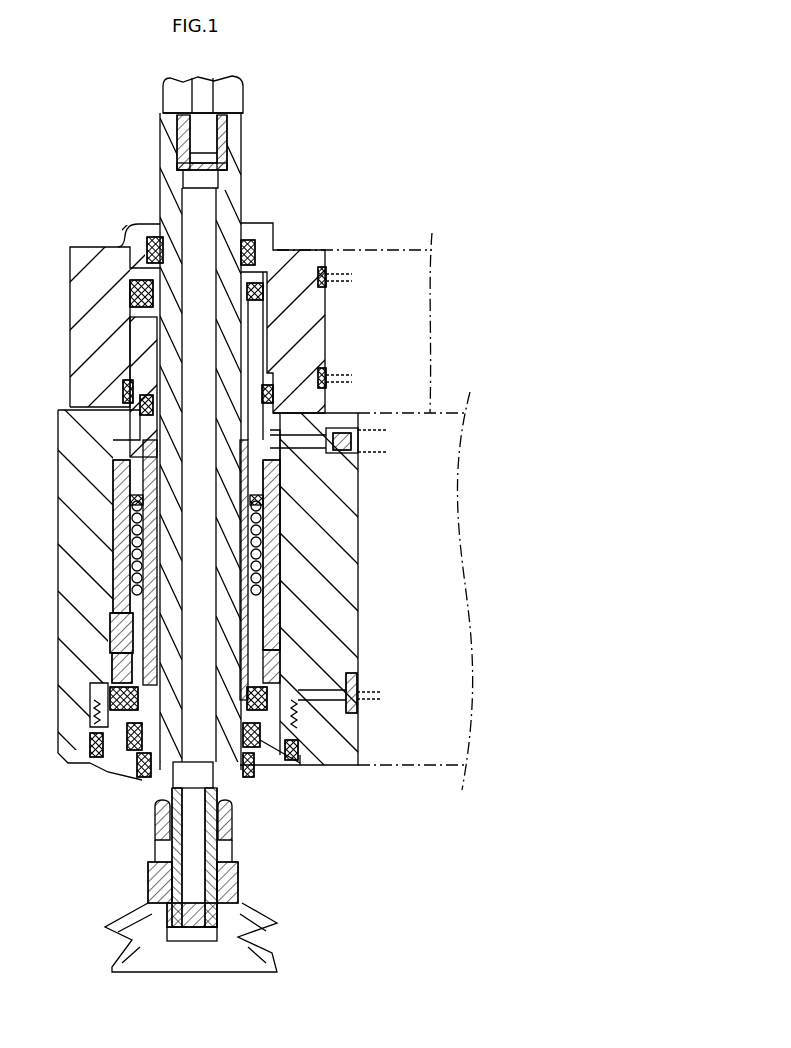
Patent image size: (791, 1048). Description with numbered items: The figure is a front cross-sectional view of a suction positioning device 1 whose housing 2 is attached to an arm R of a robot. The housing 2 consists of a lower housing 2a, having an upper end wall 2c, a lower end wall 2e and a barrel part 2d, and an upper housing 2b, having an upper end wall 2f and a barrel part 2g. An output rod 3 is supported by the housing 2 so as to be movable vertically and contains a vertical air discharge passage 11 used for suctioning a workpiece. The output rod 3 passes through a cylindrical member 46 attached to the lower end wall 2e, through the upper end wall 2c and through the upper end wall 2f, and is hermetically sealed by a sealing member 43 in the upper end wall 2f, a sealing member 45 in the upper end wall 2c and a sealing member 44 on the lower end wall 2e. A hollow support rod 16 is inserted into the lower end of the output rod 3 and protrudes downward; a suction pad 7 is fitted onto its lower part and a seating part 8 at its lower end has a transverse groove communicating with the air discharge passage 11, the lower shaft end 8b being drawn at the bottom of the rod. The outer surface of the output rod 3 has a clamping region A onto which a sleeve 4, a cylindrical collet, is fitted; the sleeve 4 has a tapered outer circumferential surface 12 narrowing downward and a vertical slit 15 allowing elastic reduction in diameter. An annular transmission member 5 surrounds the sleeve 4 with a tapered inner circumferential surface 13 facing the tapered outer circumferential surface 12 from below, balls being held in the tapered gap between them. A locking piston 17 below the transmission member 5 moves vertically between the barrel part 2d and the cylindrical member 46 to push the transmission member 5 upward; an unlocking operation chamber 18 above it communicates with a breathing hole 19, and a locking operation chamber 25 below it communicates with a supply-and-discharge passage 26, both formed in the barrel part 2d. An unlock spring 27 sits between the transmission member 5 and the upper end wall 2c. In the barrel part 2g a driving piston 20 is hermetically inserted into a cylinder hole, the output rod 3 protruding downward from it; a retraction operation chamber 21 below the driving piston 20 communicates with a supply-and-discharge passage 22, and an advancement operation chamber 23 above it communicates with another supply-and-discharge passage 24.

The suction positioning device 1 is at (352, 90).
The arm of a robot R is at (374, 250).
The housing 2 is at (362, 613).
The lower housing 2a is at (362, 568).
The upper housing 2b is at (330, 330).
The upper end wall 2c is at (133, 418).
The barrel part 2d is at (75, 543).
The lower end wall 2e is at (122, 766).
The upper end wall 2f is at (120, 244).
The barrel part 2g is at (84, 309).
The output rod 3 is at (247, 175).
The sleeve 4 is at (123, 467).
The transmission member 5 is at (130, 567).
The suction pad 7 is at (122, 921).
The seating part 8 is at (130, 594).
The lower shaft end 8b is at (192, 851).
The air discharge passage 11 is at (200, 214).
The tapered outer circumferential surface 12 is at (140, 492).
The tapered inner circumferential surface 13 is at (130, 632).
The slit 15 is at (278, 497).
The support rod 16 is at (222, 913).
The locking piston 17 is at (90, 697).
The unlocking operation chamber 18 is at (270, 467).
The breathing hole 19 is at (386, 454).
The driving piston 20 is at (130, 277).
The retraction operation chamber 21 is at (143, 354).
The supply-and-discharge passage 22 is at (352, 381).
The advancement operation chamber 23 is at (268, 252).
The supply-and-discharge passage 24 is at (352, 281).
The locking operation chamber 25 is at (268, 757).
The supply-and-discharge passage 26 is at (380, 698).
The unlock spring 27 is at (135, 503).
The sealing member 43 is at (147, 243).
The sealing member 44 is at (145, 782).
The sealing member 45 is at (128, 400).
The cylindrical member 46 is at (253, 790).
The clamping region A is at (278, 481).